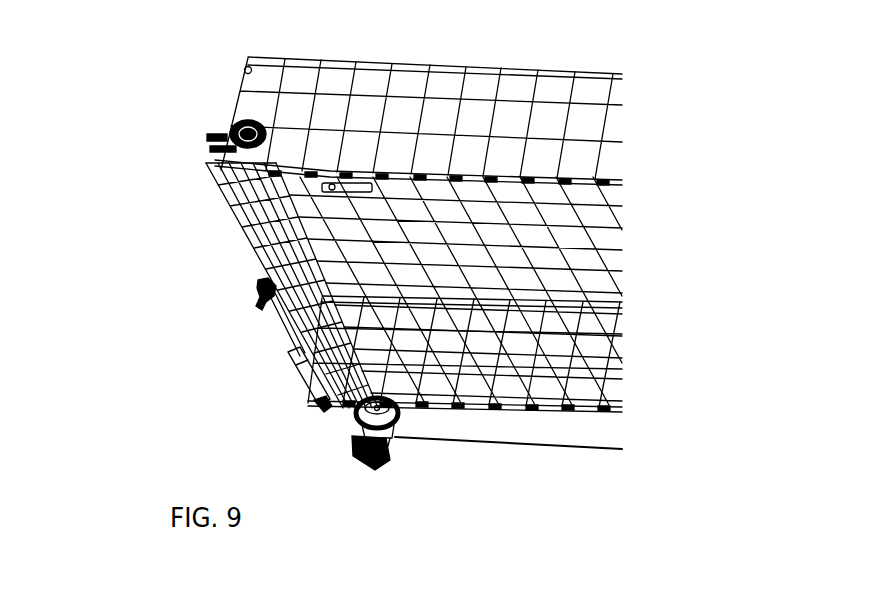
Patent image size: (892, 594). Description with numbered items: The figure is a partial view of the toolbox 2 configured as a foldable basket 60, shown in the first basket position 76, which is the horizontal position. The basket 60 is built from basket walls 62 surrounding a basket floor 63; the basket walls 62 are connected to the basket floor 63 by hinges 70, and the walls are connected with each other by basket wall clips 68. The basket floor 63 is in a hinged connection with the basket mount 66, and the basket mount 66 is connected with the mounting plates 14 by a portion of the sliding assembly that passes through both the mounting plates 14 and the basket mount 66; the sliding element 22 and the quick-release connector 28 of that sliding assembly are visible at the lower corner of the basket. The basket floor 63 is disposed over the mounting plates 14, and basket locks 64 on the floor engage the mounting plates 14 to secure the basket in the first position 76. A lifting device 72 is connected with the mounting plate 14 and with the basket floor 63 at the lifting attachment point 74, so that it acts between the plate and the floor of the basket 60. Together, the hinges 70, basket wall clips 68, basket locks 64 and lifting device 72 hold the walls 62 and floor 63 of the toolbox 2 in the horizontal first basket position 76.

The toolbox 2 is at (765, 95).
The mounting plate 14 is at (210, 150).
The sliding element 22 is at (364, 461).
The quick-release connector 28 is at (393, 430).
The basket 60 is at (672, 116).
The basket walls 62 is at (303, 163).
The basket floor 63 is at (573, 262).
The basket lock 64 is at (323, 180).
The basket mount 66 is at (502, 437).
The basket wall clips 68 is at (246, 67).
The hinge 70 is at (248, 228).
The lifting device 72 is at (318, 405).
The lifting attachment point 74 is at (262, 283).
The first basket position 76 is at (93, 154).